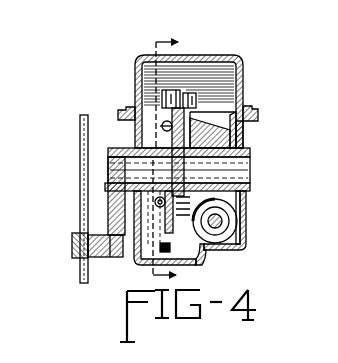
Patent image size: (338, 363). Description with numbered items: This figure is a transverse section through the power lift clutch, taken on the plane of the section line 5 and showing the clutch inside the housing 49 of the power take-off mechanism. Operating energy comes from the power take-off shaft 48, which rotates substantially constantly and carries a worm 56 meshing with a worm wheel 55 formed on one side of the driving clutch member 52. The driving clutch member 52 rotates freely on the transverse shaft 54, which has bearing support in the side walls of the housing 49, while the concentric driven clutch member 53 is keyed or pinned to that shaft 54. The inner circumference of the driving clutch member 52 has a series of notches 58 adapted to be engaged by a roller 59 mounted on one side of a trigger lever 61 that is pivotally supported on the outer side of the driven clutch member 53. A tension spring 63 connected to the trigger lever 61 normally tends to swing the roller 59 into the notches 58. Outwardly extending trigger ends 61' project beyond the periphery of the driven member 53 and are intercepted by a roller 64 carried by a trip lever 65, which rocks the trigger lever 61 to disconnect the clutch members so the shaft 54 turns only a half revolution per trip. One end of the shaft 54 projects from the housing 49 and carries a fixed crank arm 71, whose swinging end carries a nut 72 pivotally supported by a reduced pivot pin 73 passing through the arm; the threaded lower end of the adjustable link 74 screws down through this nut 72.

The section line 5 is at (174, 157).
The power take-off shaft 48 is at (229, 221).
The housing 49 is at (246, 134).
The driving clutch member 52 is at (244, 80).
The driven clutch member 53 is at (136, 108).
The transverse shaft 54 is at (252, 167).
The worm wheel 55 is at (246, 199).
The worm 56 is at (242, 239).
The notches 58 is at (205, 245).
The roller 59 is at (205, 118).
The trigger lever 61 is at (141, 152).
The trigger ends 61' is at (155, 237).
The tension spring 63 is at (155, 204).
The roller 64 is at (171, 96).
The trip lever 65 is at (193, 101).
The crank arm 71 is at (110, 197).
The nut 72 is at (71, 246).
The pivot pin 73 is at (102, 260).
The adjustable link 74 is at (79, 139).